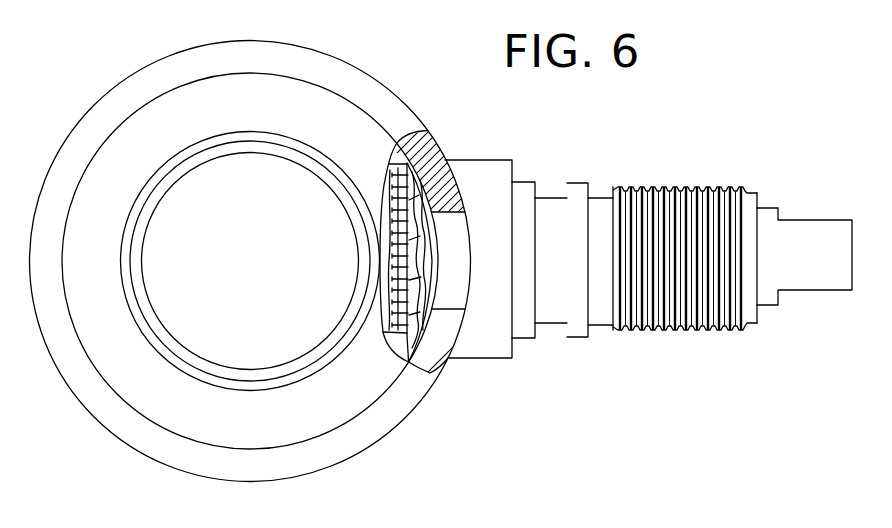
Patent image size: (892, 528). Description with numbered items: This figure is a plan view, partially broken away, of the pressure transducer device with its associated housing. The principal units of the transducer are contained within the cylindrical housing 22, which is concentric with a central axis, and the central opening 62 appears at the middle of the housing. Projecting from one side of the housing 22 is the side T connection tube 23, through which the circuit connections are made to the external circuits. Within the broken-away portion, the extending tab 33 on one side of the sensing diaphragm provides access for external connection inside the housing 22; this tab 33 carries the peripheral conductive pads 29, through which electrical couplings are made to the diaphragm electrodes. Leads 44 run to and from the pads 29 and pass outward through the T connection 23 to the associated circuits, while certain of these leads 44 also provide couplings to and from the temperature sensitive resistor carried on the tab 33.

The cylindrical housing 22 is at (166, 464).
The central bore 62 is at (283, 177).
The peripheral conductive pad 29 is at (426, 131).
The extending tab 33 is at (391, 340).
The leads 44 is at (426, 198).
The side T connection tube 23 is at (556, 323).